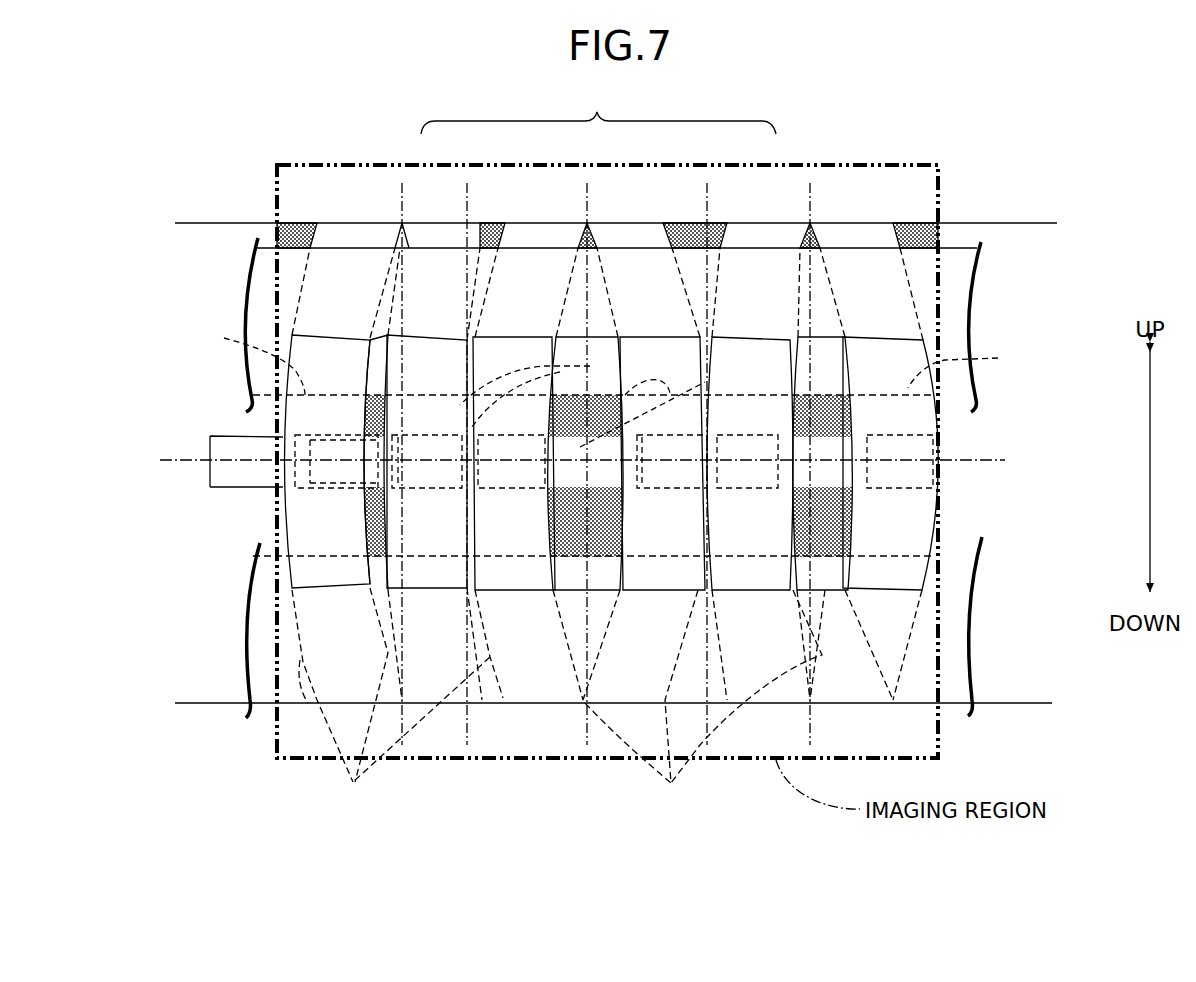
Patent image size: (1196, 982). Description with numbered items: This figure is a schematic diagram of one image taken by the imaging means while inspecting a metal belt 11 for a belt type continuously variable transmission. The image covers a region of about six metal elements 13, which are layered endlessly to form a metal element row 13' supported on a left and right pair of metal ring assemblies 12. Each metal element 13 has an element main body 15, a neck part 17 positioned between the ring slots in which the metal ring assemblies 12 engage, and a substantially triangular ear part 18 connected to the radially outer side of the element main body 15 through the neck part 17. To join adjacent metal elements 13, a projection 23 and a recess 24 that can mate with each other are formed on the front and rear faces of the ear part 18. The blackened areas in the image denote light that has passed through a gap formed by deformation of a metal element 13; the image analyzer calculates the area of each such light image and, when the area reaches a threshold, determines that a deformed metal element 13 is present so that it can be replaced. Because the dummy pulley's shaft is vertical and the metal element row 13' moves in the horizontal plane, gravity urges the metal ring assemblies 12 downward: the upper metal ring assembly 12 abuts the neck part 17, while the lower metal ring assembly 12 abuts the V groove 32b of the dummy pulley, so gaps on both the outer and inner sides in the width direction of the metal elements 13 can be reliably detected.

The metal belt 11 is at (953, 213).
The metal ring assembly 12 is at (952, 328).
The metal element 13 is at (607, 231).
The metal element row 13' is at (598, 112).
The element main body 15 is at (607, 702).
The neck part 17 is at (613, 394).
The ear part 18 is at (340, 347).
The projection 23 is at (250, 480).
The recess 24 is at (465, 433).
The V groove 32b is at (1033, 223).